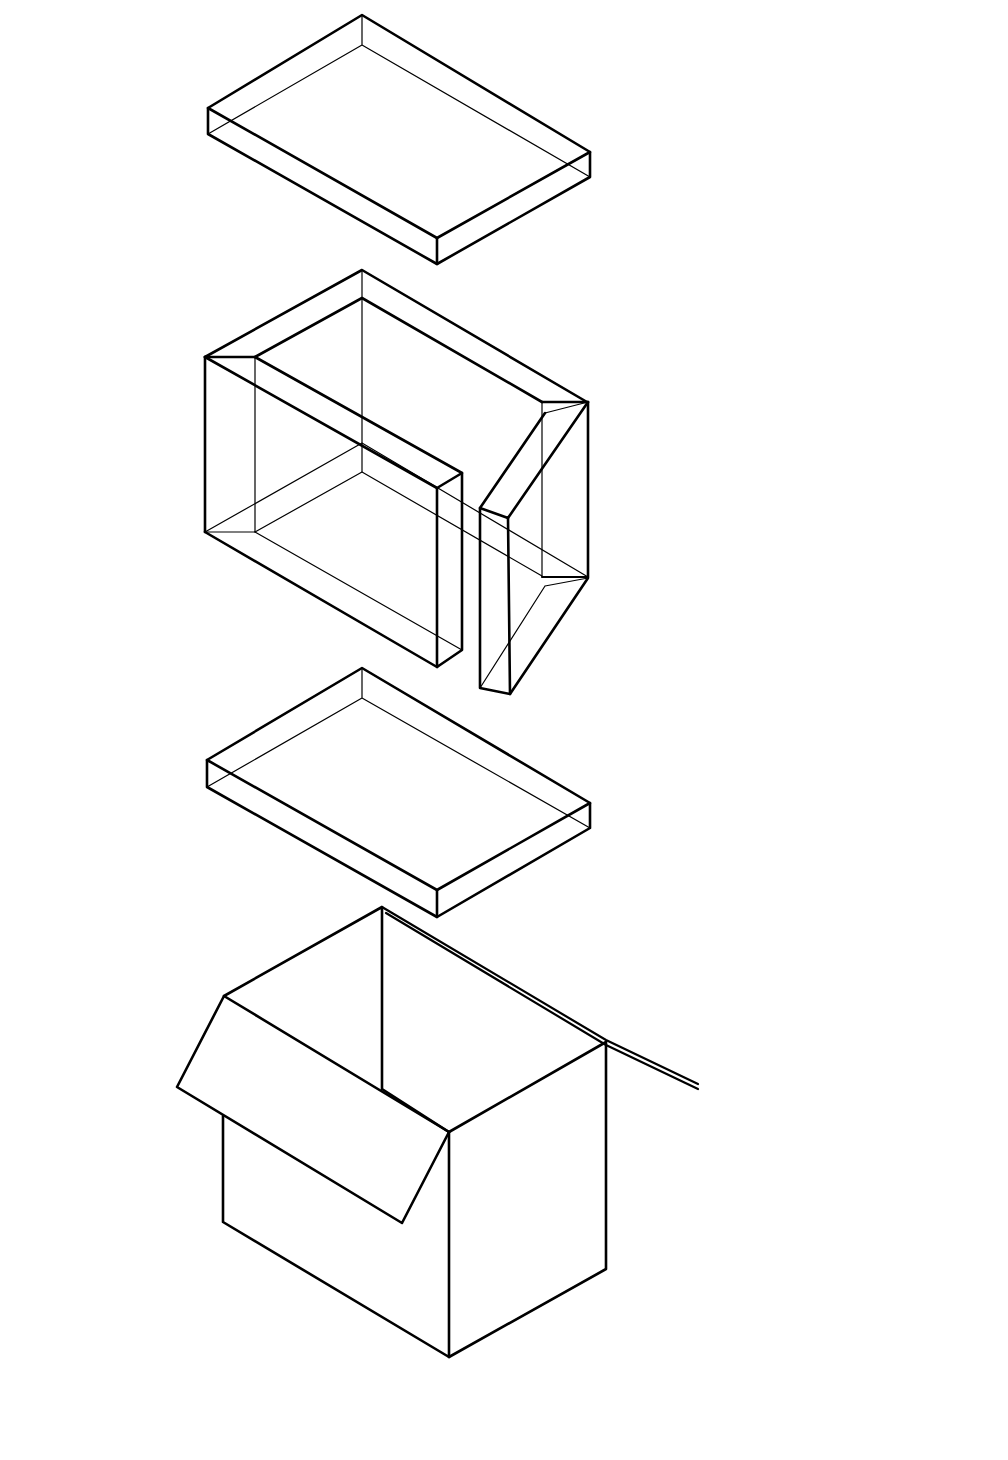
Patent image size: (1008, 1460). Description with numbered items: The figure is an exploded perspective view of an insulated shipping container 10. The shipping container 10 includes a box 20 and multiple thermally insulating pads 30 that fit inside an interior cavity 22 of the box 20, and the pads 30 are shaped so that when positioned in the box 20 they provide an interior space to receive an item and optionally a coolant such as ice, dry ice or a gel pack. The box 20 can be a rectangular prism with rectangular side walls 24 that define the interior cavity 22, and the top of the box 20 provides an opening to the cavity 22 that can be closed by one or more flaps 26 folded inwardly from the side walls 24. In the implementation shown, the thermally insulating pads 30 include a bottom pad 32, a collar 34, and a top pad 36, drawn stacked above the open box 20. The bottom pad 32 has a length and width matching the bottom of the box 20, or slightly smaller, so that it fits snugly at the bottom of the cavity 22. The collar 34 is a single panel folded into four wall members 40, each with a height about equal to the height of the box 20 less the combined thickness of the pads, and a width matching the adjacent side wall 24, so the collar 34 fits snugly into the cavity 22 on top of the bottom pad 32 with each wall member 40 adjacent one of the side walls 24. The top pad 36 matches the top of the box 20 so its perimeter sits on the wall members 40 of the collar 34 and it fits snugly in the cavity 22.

The insulated shipping container 10 is at (827, 42).
The box 20 is at (381, 1132).
The interior cavity 22 is at (331, 999).
The side walls 24 is at (559, 1168).
The flaps 26 is at (578, 1013).
The thermally insulating pads 30 is at (750, 45).
The bottom pad 32 is at (502, 835).
The collar 34 is at (368, 475).
The top pad 36 is at (500, 225).
The wall members 40 is at (285, 316).